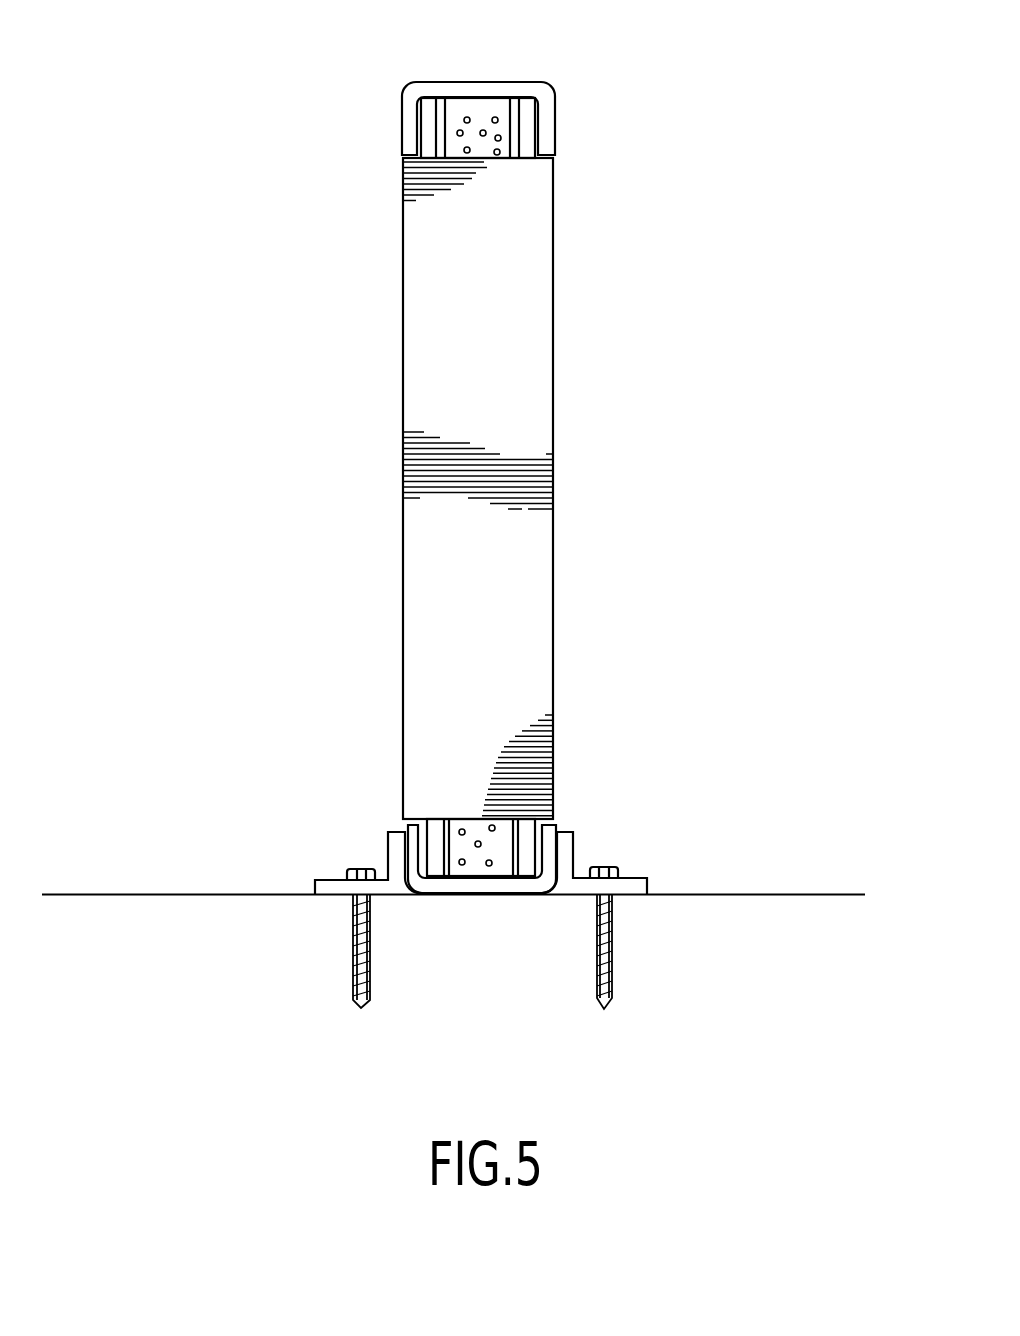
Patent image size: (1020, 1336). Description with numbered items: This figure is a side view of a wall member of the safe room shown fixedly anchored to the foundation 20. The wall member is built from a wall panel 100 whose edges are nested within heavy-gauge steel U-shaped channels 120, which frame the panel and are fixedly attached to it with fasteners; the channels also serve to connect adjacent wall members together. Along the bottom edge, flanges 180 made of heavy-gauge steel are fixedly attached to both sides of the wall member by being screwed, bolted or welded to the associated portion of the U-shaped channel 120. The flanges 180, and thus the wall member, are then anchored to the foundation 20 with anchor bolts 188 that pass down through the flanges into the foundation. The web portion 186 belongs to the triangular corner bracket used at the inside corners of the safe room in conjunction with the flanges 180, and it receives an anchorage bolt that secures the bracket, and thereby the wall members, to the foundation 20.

The foundation 20 is at (825, 948).
The wall panel 100 is at (540, 124).
The U-shaped channel 120 is at (443, 238).
The flange 180 is at (388, 850).
The web portion 186 is at (613, 955).
The anchor bolt 188 is at (353, 968).